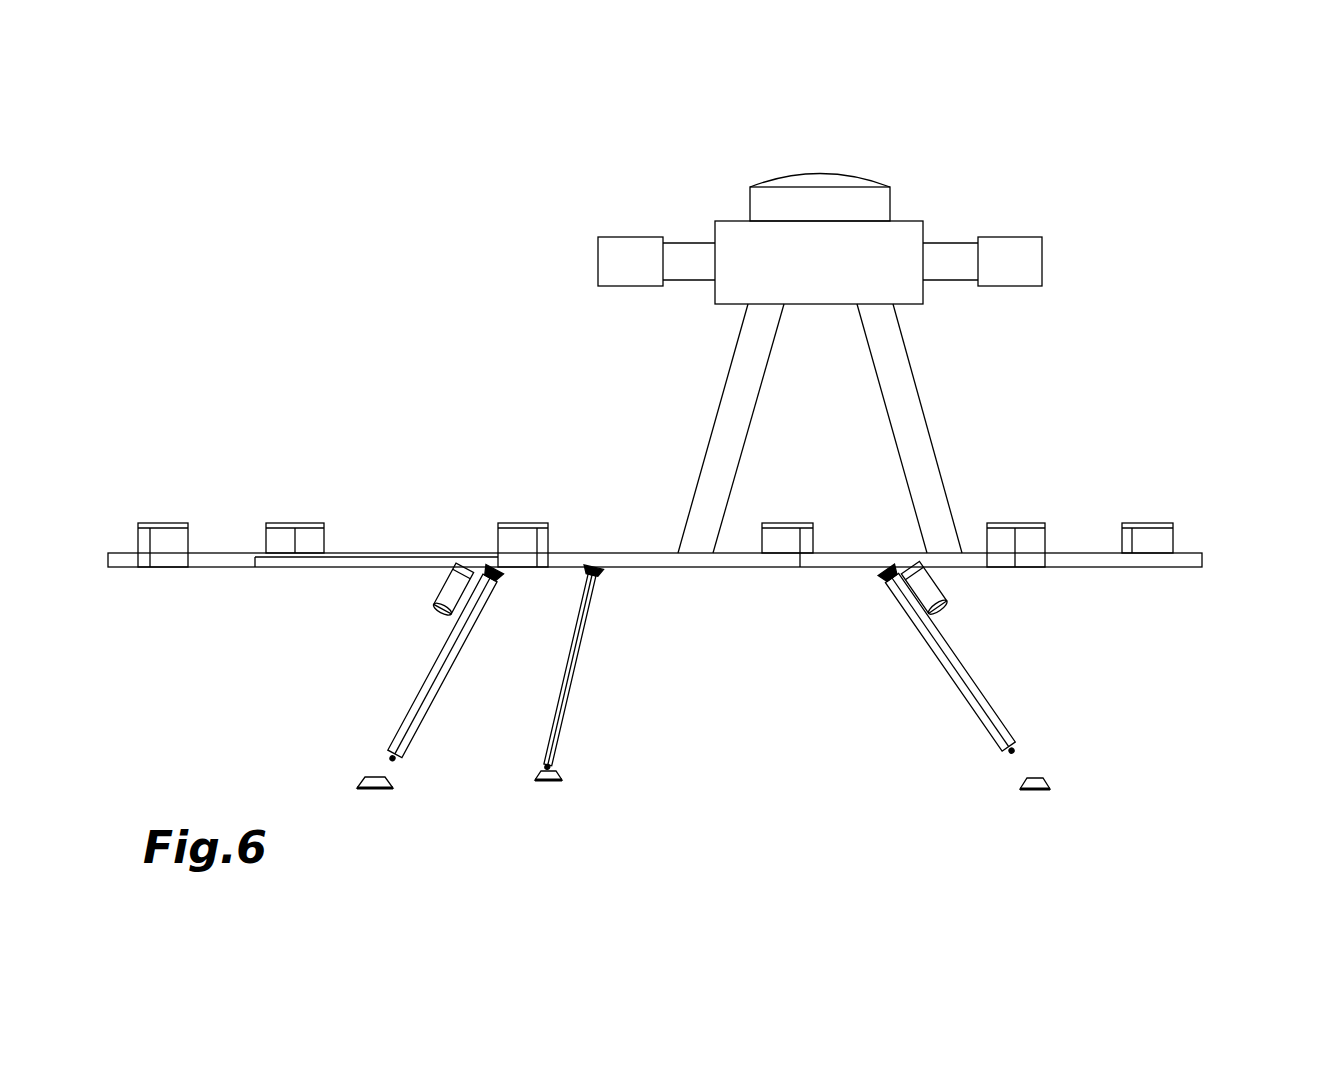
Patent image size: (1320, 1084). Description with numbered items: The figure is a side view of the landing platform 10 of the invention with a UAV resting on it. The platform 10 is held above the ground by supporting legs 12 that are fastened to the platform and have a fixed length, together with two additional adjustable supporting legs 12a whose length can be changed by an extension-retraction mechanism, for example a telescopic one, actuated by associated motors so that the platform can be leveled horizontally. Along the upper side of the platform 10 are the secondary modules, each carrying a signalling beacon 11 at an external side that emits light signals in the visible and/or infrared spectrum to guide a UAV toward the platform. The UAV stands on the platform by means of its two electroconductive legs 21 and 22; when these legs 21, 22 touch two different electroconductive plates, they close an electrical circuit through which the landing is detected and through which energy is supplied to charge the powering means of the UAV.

The element UAV is at (675, 207).
The landing platform 10 is at (400, 499).
The signalling beacon 11 is at (1145, 542).
The supporting leg 12 is at (572, 680).
The adjustable supporting leg 12a is at (975, 712).
The electroconductive leg 21 is at (755, 372).
The electroconductive leg 22 is at (903, 395).